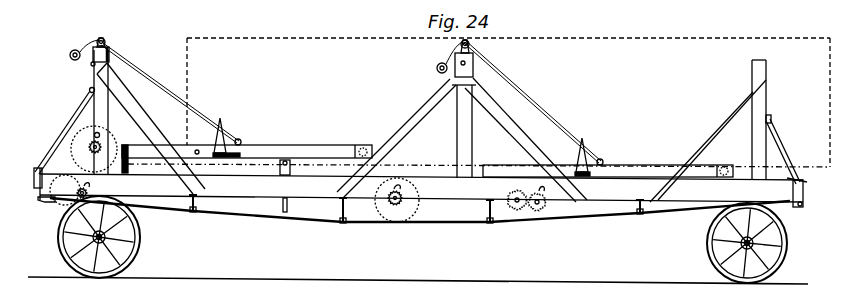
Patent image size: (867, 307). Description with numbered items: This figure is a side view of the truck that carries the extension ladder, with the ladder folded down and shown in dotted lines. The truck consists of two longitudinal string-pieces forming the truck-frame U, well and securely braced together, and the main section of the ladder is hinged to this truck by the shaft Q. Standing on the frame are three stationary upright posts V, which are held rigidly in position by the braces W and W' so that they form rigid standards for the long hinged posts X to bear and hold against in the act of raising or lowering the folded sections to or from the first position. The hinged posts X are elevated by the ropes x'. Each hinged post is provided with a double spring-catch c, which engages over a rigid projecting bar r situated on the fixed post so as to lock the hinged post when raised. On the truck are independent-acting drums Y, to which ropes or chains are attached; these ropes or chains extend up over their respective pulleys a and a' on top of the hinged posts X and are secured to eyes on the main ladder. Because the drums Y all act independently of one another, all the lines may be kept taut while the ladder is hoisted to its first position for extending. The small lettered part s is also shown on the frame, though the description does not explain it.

The truck-frame U is at (420, 195).
The stationary upright post V is at (426, 113).
The brace W is at (431, 132).
The brace W' is at (417, 138).
The rope x' is at (330, 101).
The rigid projecting bar r is at (272, 61).
The hinged post X is at (427, 153).
The pulley a' is at (361, 144).
The pulley a is at (722, 164).
The double spring-catch c is at (399, 147).
The shaft Q is at (280, 167).
The hanger stud s is at (289, 205).
The drum Y is at (55, 202).